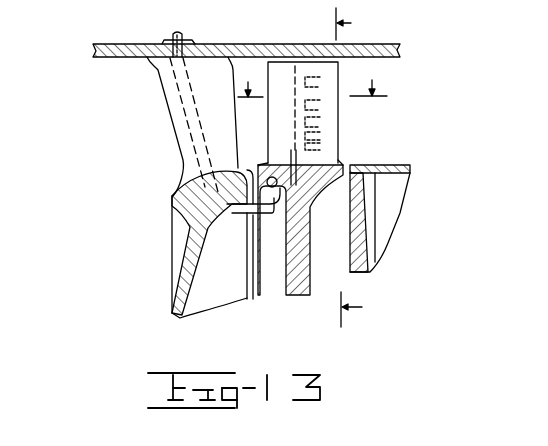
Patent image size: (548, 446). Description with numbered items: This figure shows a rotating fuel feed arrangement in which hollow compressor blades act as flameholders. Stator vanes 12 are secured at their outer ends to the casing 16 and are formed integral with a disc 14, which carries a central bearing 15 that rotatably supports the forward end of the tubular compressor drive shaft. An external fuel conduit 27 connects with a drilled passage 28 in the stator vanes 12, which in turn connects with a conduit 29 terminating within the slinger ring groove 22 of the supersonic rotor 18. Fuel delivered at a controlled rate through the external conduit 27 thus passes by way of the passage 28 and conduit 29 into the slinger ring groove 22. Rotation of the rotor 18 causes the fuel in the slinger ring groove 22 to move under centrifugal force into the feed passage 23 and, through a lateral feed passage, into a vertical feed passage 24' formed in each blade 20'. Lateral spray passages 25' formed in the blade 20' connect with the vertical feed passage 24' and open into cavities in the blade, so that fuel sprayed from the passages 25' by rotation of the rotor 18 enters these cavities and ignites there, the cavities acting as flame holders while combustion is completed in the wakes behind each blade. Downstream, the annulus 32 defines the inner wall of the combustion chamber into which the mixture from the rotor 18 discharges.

The stator vanes 12 is at (216, 96).
The disc 14 is at (319, 79).
The central bearing 15 is at (364, 167).
The casing 16 is at (230, 43).
The rotor 18 is at (310, 243).
The blade 20' is at (303, 112).
The slinger ring groove 22 is at (268, 162).
The feed passage 23 is at (293, 173).
The vertical feed passage 24' is at (285, 108).
The spray passages 25' is at (340, 108).
The external fuel conduit 27 is at (178, 34).
The drilled passage 28 is at (187, 113).
The conduit 29 is at (273, 214).
The annulus 32 is at (367, 165).